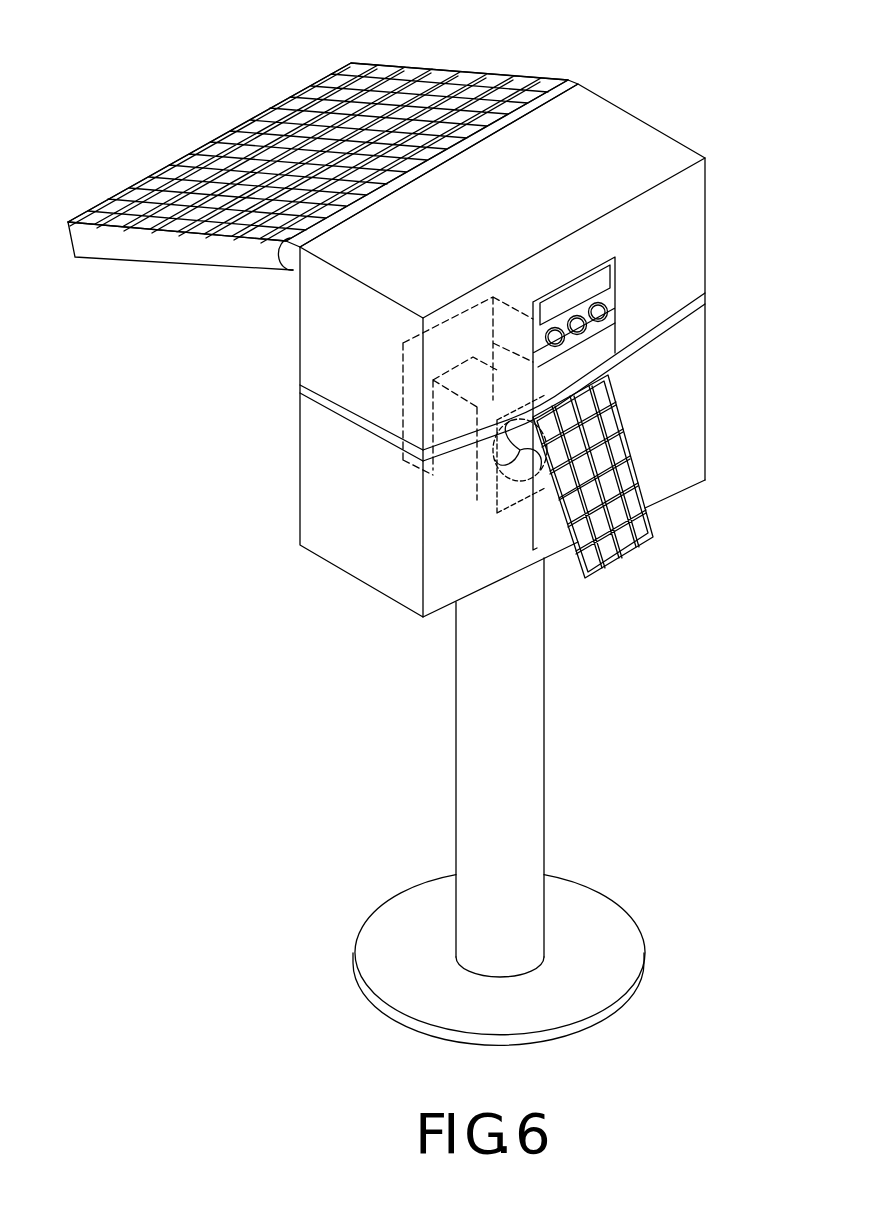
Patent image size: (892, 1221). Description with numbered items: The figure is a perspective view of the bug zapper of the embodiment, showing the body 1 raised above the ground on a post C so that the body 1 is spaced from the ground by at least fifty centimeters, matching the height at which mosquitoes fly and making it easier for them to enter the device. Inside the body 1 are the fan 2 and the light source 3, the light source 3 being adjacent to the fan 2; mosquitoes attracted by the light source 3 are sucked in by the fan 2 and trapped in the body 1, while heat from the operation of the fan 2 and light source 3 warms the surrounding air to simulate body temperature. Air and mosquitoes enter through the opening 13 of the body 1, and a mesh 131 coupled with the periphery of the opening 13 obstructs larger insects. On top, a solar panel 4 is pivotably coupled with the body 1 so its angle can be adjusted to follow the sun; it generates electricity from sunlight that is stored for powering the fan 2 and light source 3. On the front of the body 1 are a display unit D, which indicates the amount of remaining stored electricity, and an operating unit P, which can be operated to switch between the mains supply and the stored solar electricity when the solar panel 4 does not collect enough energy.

The body 1 is at (630, 122).
The fan 2 is at (478, 500).
The light source 3 is at (572, 360).
The solar panel 4 is at (449, 72).
The opening 13 is at (645, 478).
The mesh 131 is at (640, 495).
The display unit D is at (615, 278).
The operating unit P is at (605, 313).
The post C is at (533, 735).